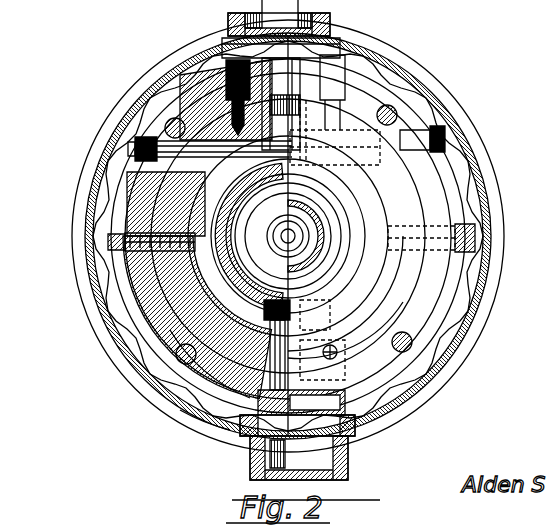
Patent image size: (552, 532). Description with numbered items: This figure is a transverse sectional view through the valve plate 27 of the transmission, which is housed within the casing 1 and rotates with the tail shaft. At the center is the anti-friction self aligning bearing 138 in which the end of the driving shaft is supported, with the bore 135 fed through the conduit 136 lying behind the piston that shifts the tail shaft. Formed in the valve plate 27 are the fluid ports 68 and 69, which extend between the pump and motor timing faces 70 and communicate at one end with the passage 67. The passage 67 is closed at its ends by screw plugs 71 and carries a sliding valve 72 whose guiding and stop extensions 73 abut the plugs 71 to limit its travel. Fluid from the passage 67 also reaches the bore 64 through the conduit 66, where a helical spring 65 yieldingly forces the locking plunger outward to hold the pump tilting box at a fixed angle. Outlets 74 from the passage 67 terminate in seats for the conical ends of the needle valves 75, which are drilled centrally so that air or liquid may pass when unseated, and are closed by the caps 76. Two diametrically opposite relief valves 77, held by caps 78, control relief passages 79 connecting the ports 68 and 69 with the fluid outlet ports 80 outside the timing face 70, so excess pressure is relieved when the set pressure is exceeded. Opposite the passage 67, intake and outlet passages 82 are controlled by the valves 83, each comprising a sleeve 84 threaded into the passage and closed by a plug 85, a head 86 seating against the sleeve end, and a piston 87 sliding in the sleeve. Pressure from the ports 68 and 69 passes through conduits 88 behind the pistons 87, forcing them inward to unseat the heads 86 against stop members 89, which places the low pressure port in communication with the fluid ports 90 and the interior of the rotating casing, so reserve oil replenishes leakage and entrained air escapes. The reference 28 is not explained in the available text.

The casing 1 is at (420, 72).
The valve plate 27 is at (100, 212).
The housing lobes 28 is at (438, 90).
The bore 64 is at (296, 104).
The helical spring 65 is at (252, 160).
The conduit 66 is at (288, 144).
The passage 67 is at (200, 84).
The fluid port 68 is at (140, 286).
The fluid port 69 is at (402, 302).
The timing face 70 is at (432, 190).
The screw plug 71 is at (128, 148).
The valve 72 is at (300, 126).
The guiding and stop extension 73 is at (300, 160).
The outlet 74 is at (226, 80).
The needle valve 75 is at (222, 44).
The closing cap 76 is at (228, 20).
The relief valve 77 is at (108, 248).
The cap 78 is at (108, 240).
The relief passage 79 is at (230, 278).
The fluid outlet port 80 is at (465, 252).
The fluid intake and outlet passage 82 is at (342, 322).
The valve 83 is at (345, 400).
The sleeve 84 is at (198, 372).
The plug 85 is at (232, 390).
The valve head 86 is at (300, 296).
The piston 87 is at (215, 420).
The conduit 88 is at (337, 351).
The stop member 89 is at (272, 298).
The fluid port 90 is at (345, 368).
The bore 135 is at (228, 212).
The conduit 136 is at (345, 150).
The anti-friction self aligning bearing 138 is at (340, 233).